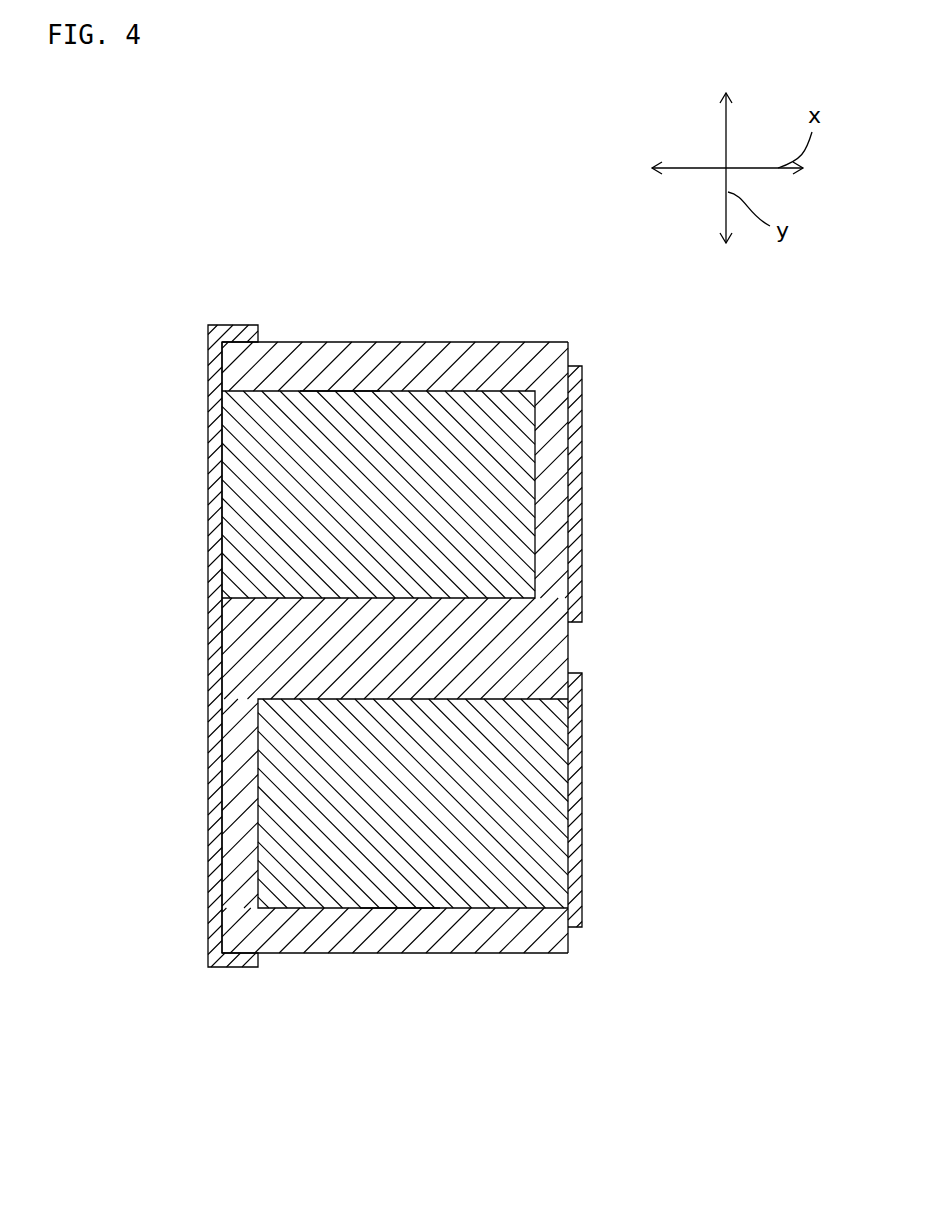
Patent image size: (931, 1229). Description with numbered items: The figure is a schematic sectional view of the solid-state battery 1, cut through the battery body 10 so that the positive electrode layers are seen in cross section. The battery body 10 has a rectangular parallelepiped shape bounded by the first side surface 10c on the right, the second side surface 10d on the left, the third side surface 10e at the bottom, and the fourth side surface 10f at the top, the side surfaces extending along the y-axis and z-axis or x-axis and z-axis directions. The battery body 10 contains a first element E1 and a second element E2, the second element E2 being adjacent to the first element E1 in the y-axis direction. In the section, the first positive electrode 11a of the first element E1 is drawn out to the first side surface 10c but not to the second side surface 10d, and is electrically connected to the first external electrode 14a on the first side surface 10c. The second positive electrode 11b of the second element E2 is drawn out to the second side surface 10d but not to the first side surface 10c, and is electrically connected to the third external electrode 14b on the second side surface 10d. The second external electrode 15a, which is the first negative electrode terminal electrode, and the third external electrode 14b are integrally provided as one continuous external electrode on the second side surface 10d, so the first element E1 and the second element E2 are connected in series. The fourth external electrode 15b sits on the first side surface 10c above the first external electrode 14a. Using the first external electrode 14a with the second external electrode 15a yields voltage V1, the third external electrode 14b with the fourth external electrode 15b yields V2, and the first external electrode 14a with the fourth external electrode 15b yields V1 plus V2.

The solid-state battery 1 is at (566, 247).
The battery body 10 is at (424, 340).
The first side surface 10c is at (568, 650).
The second side surface 10d is at (222, 655).
The third side surface 10e is at (485, 955).
The fourth side surface 10f is at (497, 342).
The first positive electrode 11a is at (312, 908).
The second positive electrode 11b is at (385, 391).
The first external electrode 14a is at (583, 795).
The third external electrode 14b is at (208, 484).
The second external electrode 15a is at (208, 810).
The fourth external electrode 15b is at (583, 498).
The first element E1 is at (398, 910).
The second element E2 is at (340, 388).